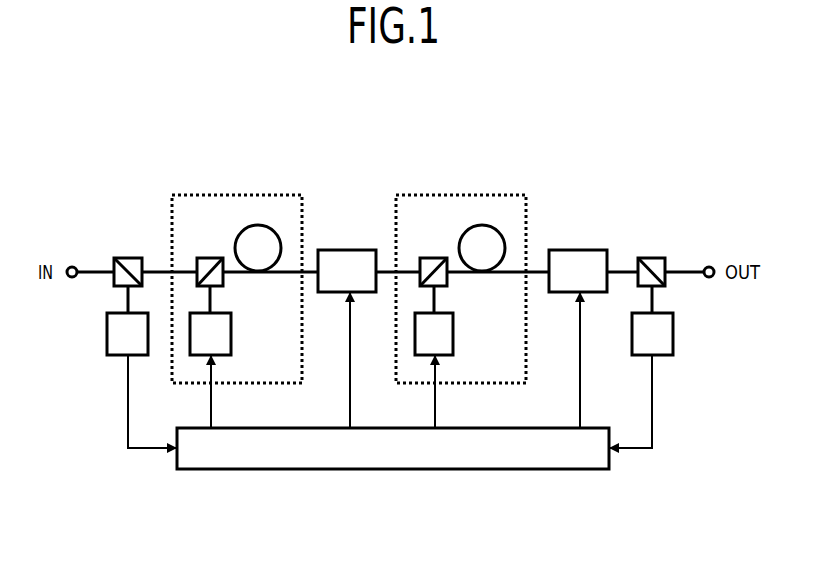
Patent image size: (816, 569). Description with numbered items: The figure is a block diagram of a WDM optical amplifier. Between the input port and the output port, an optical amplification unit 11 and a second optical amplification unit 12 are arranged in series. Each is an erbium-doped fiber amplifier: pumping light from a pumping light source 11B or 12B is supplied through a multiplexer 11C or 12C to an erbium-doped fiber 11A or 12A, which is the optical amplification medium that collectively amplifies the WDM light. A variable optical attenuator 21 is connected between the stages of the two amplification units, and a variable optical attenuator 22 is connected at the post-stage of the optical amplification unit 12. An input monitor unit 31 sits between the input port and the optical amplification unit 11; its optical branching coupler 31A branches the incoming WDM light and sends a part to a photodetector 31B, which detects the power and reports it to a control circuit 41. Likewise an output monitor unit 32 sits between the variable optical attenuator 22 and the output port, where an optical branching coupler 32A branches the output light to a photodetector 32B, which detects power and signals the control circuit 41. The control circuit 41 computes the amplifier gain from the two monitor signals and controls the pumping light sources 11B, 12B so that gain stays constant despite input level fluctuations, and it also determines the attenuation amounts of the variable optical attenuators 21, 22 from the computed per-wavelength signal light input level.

The optical amplification unit 11 is at (273, 195).
The erbium-doped fiber 11A is at (263, 276).
The pumping light source 11B is at (230, 333).
The multiplexer 11C is at (210, 258).
The optical amplification unit 12 is at (500, 195).
The erbium-doped fiber 12A is at (487, 276).
The pumping light source 12B is at (454, 333).
The multiplexer 12C is at (432, 258).
The variable optical attenuator 21 is at (350, 250).
The variable optical attenuator 22 is at (578, 250).
The input monitor unit 31 is at (128, 192).
The optical branching coupler 31A is at (127, 258).
The photodetector 31B is at (115, 357).
The output monitor unit 32 is at (641, 207).
The optical branching coupler 32A is at (651, 258).
The photodetector 32B is at (665, 356).
The control circuit 41 is at (398, 470).